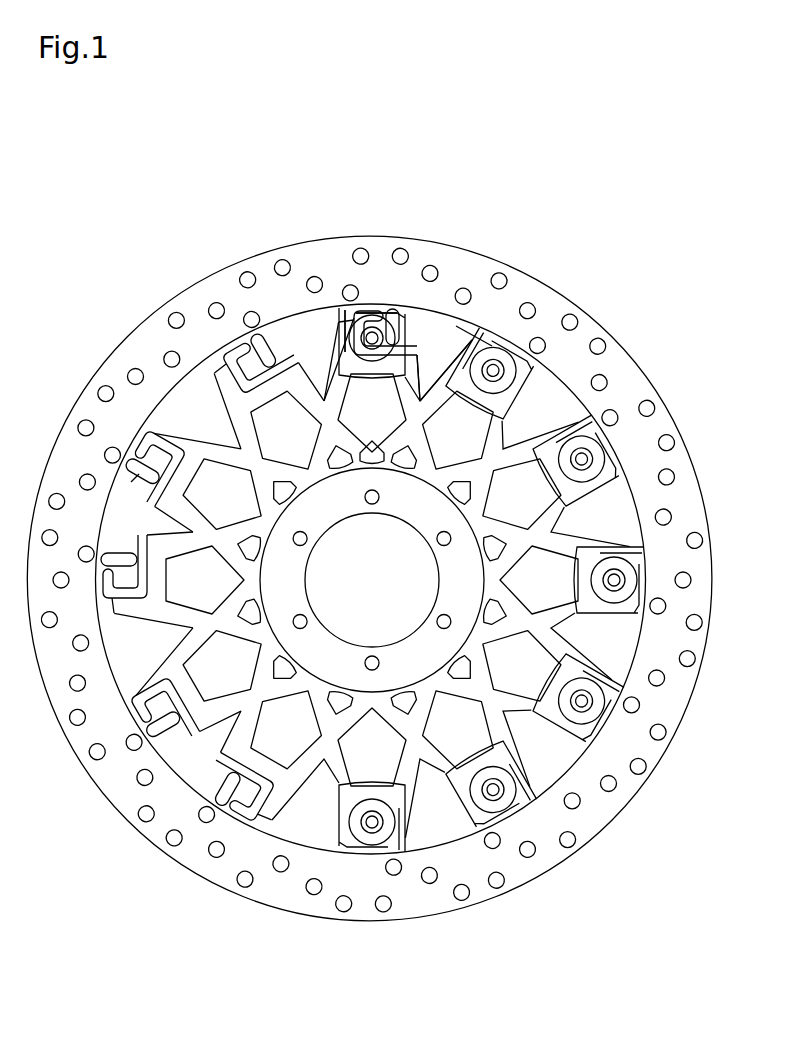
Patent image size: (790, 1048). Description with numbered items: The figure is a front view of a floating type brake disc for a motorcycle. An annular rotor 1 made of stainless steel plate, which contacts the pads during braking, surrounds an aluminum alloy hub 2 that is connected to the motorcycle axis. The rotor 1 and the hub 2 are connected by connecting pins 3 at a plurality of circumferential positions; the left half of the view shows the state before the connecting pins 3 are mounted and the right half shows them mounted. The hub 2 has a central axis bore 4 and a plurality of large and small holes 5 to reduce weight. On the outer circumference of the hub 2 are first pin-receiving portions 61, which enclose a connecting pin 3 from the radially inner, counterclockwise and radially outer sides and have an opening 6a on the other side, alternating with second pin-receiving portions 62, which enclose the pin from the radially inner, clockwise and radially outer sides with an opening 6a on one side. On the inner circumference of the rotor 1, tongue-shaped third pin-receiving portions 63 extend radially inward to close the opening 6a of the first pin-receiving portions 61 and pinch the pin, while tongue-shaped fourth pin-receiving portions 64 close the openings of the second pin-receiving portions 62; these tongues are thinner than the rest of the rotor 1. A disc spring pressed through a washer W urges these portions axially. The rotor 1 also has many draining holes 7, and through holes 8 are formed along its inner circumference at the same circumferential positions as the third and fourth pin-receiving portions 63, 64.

The rotor 1 is at (452, 242).
The hub 2 is at (495, 457).
The connecting pin 3 is at (396, 349).
The central axis bore 4 is at (393, 526).
The large and small holes 5 is at (474, 722).
The first pin-receiving portion 61 is at (217, 370).
The second pin-receiving portion 62 is at (163, 428).
The third pin-receiving portion 63 is at (263, 357).
The fourth pin-receiving portion 64 is at (338, 318).
The opening 6a is at (268, 338).
The draining hole 7 is at (278, 262).
The through hole 8 is at (350, 285).
The washer W is at (400, 345).